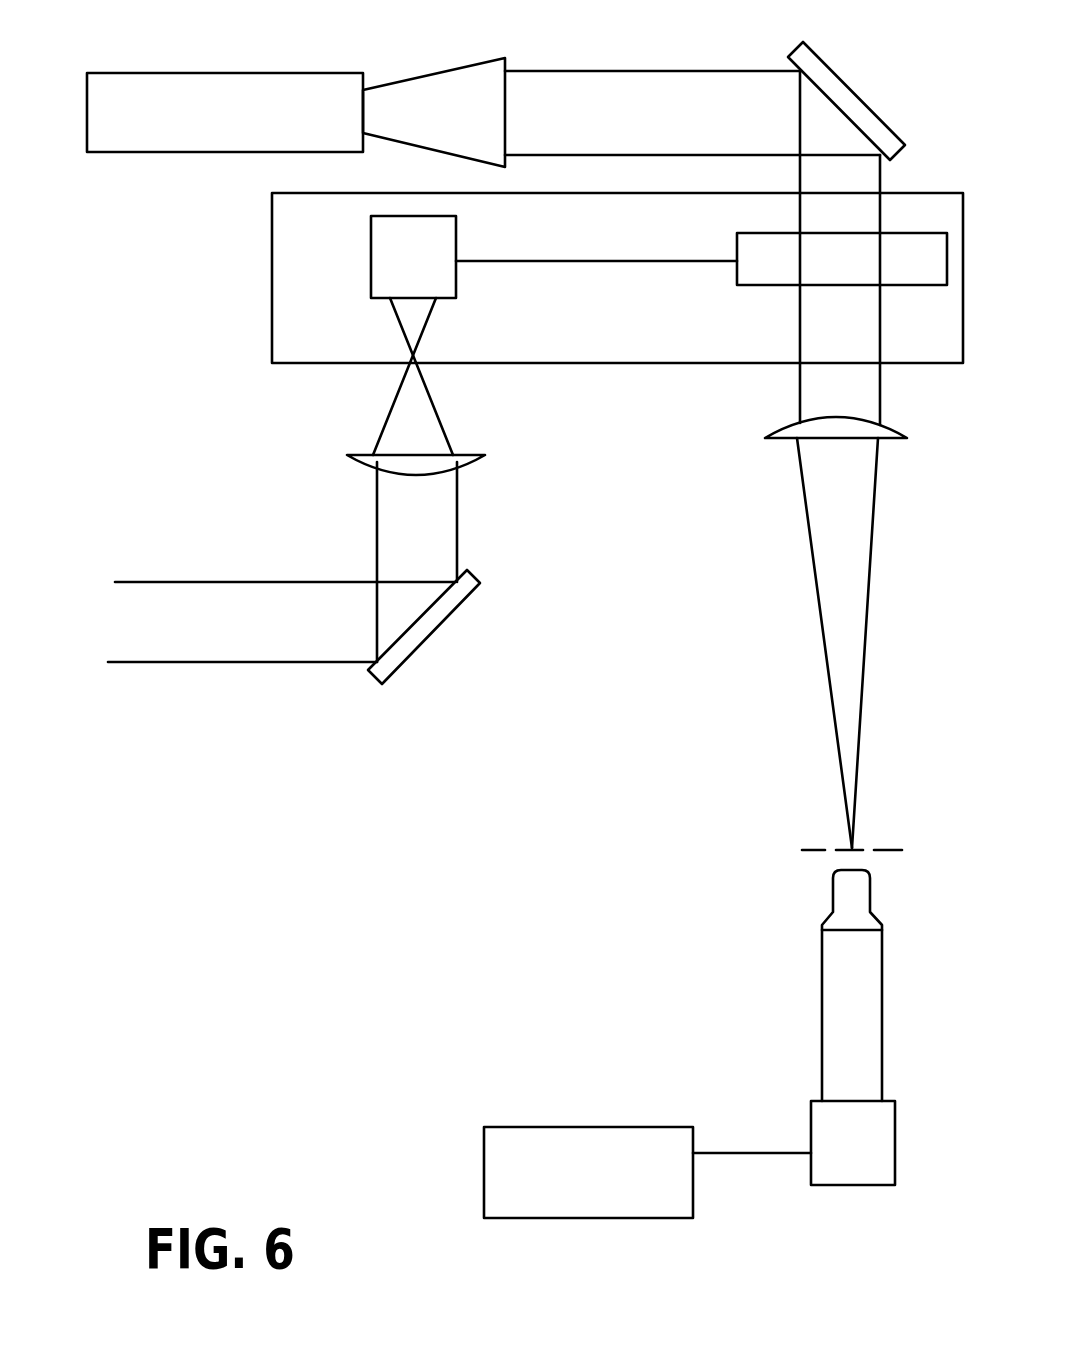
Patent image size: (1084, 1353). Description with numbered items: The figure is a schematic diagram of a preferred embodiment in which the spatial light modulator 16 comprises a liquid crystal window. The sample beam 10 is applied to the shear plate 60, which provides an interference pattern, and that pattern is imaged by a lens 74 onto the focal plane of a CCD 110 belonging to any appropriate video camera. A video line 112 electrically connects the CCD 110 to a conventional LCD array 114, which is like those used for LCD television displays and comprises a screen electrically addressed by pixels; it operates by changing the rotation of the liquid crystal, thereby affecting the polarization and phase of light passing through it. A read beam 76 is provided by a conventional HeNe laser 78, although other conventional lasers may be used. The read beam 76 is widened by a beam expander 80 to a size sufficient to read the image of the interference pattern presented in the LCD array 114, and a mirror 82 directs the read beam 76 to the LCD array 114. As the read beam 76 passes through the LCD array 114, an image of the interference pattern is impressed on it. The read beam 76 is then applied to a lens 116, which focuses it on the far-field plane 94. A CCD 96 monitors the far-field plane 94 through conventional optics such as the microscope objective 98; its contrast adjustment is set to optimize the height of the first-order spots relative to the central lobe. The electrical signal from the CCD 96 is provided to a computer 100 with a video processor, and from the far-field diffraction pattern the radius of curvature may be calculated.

The sample beam 10 is at (263, 637).
The spatial light modulator 16 is at (272, 330).
The shear plate 60 is at (443, 622).
The lens 74 is at (470, 454).
The read beam 76 is at (655, 127).
The HeNe laser 78 is at (213, 73).
The beam expander 80 is at (465, 65).
The mirror 82 is at (870, 105).
The far-field plane 94 is at (820, 848).
The CCD 96 is at (811, 1128).
The microscope objective 98 is at (833, 897).
The computer 100 is at (615, 1126).
The CCD 110 is at (371, 262).
The video line 112 is at (628, 260).
The LCD array 114 is at (768, 287).
The lens 116 is at (778, 442).